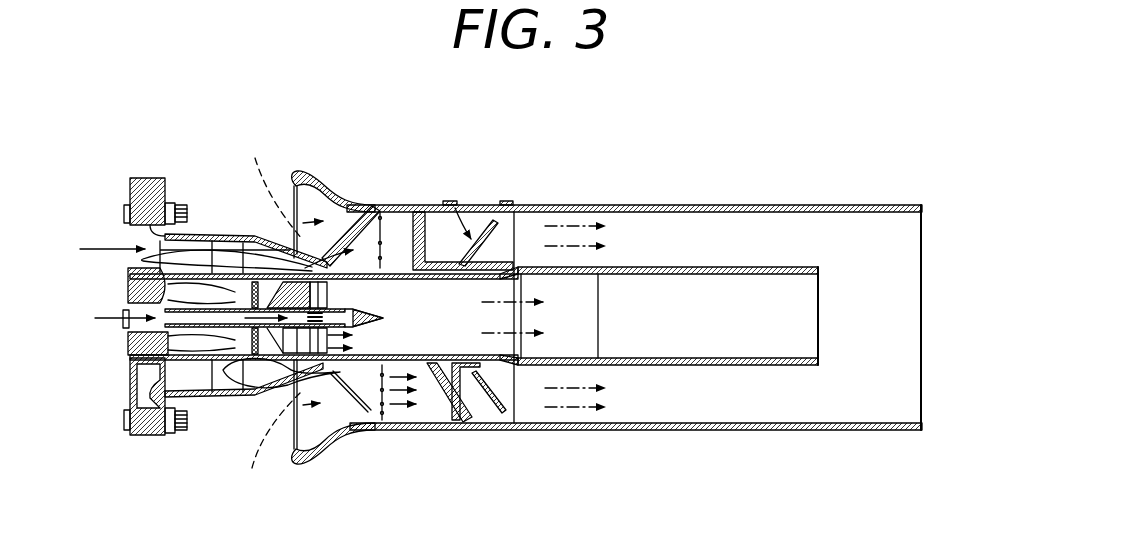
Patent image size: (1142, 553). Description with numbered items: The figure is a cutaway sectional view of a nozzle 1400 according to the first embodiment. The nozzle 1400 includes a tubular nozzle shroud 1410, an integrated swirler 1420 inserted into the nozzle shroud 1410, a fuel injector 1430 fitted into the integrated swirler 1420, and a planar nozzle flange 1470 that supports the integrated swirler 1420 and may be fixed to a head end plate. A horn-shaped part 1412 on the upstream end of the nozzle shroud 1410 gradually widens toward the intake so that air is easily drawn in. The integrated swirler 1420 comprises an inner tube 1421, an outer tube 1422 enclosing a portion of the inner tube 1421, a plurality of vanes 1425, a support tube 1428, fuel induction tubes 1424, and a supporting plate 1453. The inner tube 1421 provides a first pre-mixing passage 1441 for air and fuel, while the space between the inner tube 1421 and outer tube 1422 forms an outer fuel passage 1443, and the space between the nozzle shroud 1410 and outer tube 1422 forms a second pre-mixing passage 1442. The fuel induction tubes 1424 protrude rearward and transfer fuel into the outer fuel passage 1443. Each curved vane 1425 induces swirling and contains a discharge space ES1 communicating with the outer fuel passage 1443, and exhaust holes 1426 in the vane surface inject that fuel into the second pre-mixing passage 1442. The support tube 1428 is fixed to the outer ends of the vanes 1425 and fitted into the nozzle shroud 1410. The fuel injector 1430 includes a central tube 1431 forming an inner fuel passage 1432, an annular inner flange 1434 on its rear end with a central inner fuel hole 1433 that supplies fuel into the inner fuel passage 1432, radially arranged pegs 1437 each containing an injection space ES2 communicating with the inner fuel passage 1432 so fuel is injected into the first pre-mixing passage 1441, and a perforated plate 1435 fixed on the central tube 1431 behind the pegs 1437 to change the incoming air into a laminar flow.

The nozzle 1400 is at (670, 202).
The nozzle shroud 1410 is at (816, 204).
The horn-shaped part 1412 is at (317, 185).
The integrated swirler 1420 is at (466, 207).
The inner tube 1421 is at (371, 420).
The outer tube 1422 is at (351, 432).
The fuel induction tube 1424 is at (212, 247).
The vane 1425 is at (351, 208).
The exhaust hole 1426 is at (393, 238).
The support tube 1428 is at (504, 430).
The fuel injector 1430 is at (221, 298).
The central tube 1431 is at (199, 398).
The inner fuel passage 1432 is at (182, 320).
The inner fuel hole 1433 is at (128, 304).
The inner flange 1434 is at (133, 362).
The perforated plate 1435 is at (265, 386).
The peg 1437 is at (288, 430).
The first pre-mixing passage 1441 is at (733, 323).
The second pre-mixing passage 1442 is at (658, 401).
The outer fuel passage 1443 is at (273, 187).
The supporting plate 1453 is at (125, 414).
The nozzle flange 1470 is at (130, 180).
The discharge space ES1 is at (420, 210).
The injection space ES2 is at (326, 300).